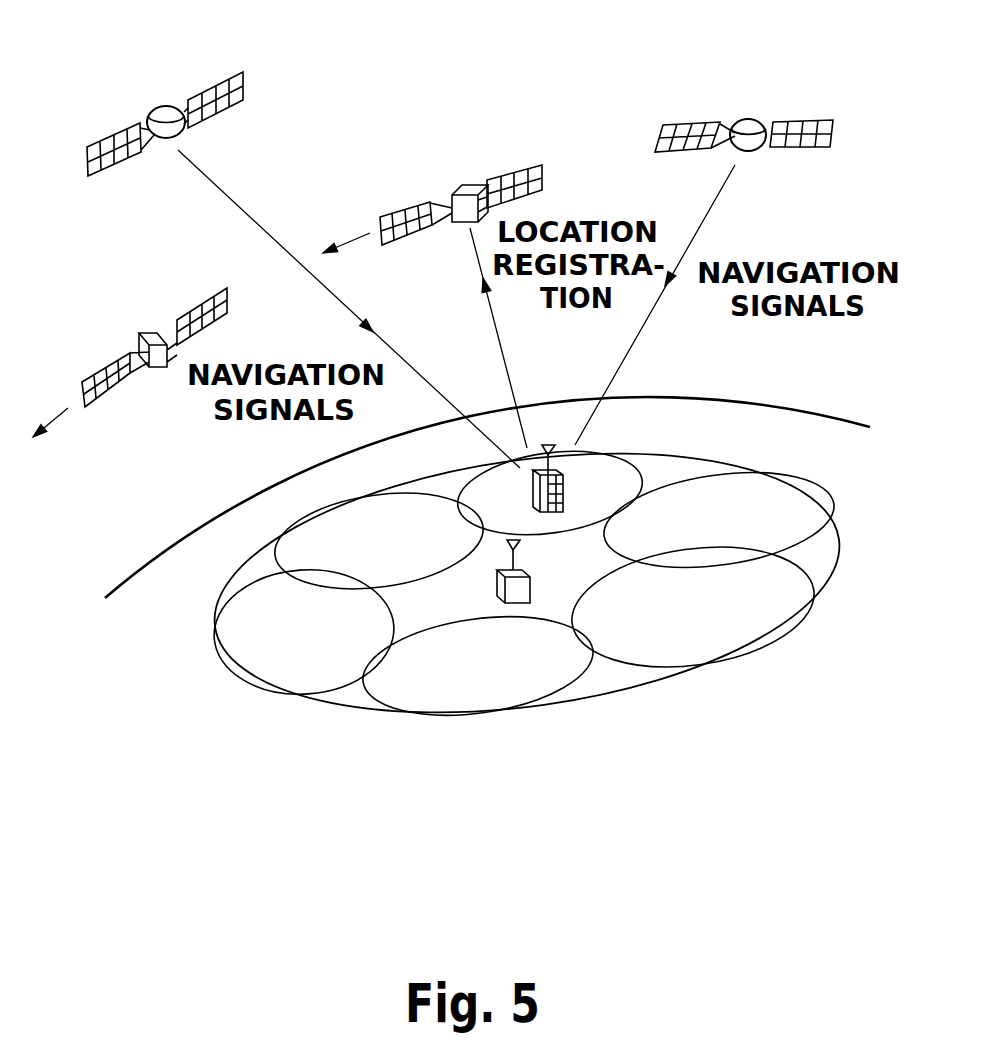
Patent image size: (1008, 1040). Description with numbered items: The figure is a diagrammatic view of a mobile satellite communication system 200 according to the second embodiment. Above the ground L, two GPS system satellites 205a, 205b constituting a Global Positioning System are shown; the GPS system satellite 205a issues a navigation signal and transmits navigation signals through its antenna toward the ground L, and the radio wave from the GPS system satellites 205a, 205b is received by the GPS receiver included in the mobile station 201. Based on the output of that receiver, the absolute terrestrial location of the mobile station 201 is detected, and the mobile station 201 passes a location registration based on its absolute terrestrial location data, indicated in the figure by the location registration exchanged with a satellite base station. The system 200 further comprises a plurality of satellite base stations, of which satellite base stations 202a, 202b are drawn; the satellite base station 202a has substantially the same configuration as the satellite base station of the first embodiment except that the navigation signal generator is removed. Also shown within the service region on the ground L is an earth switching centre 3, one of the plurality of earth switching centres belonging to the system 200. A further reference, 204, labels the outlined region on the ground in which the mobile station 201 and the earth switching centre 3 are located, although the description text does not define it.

The GPS system satellite 205a is at (168, 100).
The GPS system satellite 205b is at (748, 112).
The satellite base station 202a is at (455, 180).
The satellite base station 202b is at (153, 317).
The mobile station 201 is at (565, 497).
The earth switching centre 3 is at (535, 588).
The service area 204 is at (630, 690).
The mobile satellite communication system 200 is at (262, 752).
The ground L is at (758, 418).